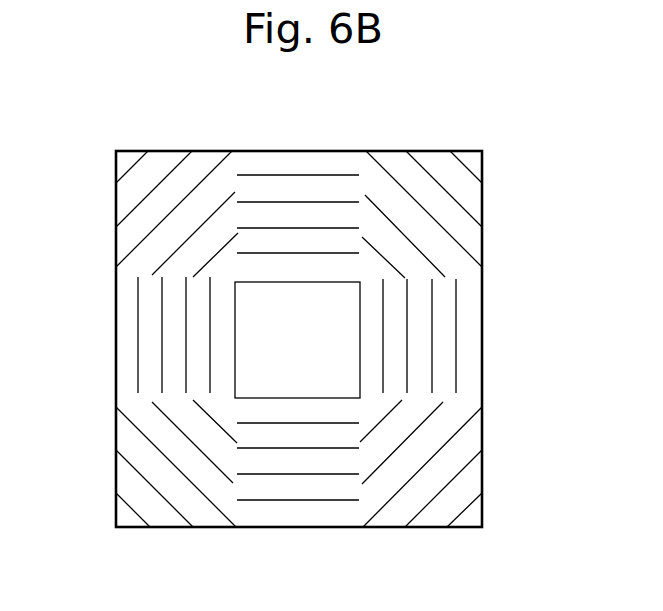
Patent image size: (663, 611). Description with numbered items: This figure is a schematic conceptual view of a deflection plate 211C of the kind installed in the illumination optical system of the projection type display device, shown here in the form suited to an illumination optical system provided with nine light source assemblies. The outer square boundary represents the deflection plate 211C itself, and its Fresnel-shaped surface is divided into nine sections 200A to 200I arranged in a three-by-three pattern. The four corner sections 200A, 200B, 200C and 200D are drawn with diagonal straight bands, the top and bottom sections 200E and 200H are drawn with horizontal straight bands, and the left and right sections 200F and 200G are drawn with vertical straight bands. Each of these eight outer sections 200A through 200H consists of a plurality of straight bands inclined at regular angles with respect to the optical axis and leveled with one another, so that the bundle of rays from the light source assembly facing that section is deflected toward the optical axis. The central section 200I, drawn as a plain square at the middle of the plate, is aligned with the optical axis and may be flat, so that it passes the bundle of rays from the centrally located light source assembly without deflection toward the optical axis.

The Fresnel-shaped surface section 200A is at (165, 148).
The Fresnel-shaped surface section 200B is at (432, 148).
The Fresnel-shaped surface section 200C is at (164, 515).
The Fresnel-shaped surface section 200D is at (429, 515).
The Fresnel-shaped surface section 200E is at (287, 148).
The Fresnel-shaped surface section 200F is at (121, 341).
The Fresnel-shaped surface section 200G is at (472, 341).
The Fresnel-shaped surface section 200H is at (299, 513).
The central section 200I is at (297, 340).
The deflection plate 211C is at (483, 203).